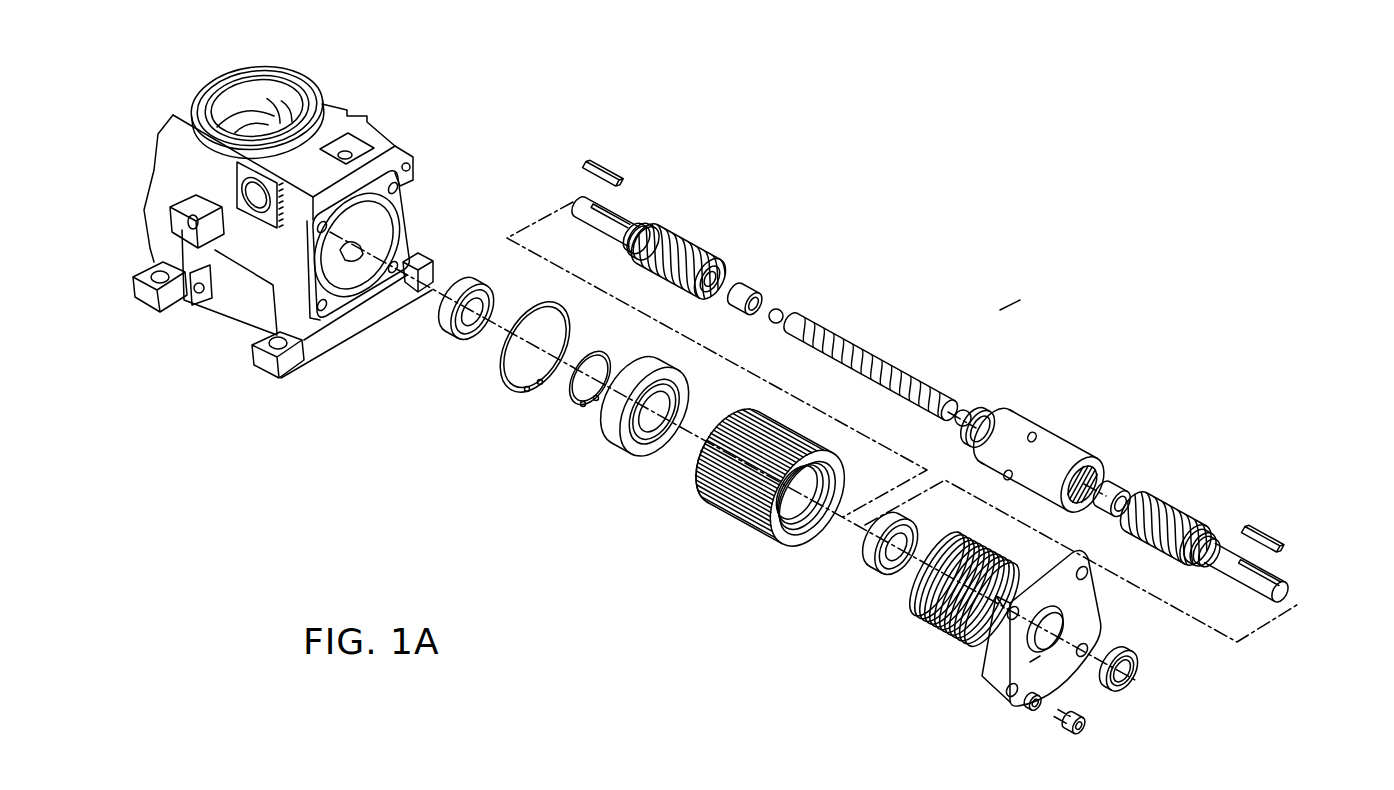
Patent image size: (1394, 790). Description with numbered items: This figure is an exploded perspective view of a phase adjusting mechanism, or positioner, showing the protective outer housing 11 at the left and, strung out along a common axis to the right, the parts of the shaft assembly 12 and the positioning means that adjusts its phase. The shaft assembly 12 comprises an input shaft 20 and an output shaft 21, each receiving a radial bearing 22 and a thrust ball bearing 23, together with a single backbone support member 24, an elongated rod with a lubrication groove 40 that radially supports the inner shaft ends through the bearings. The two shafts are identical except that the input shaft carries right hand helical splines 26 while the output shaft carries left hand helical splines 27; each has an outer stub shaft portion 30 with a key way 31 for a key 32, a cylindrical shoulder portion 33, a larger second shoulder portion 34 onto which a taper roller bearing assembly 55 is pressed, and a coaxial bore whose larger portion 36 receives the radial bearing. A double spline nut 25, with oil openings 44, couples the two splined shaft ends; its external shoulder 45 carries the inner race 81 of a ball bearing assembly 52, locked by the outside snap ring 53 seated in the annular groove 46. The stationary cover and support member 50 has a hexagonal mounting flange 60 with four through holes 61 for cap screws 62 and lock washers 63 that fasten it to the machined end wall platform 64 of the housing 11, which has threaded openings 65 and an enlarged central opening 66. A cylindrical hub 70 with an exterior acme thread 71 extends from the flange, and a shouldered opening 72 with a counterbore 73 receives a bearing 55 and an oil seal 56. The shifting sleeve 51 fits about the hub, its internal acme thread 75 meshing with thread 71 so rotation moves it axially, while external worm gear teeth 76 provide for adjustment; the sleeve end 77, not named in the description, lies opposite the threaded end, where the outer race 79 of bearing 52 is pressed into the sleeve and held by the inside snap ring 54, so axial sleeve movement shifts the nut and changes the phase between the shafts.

The outer housing means 11 is at (267, 225).
The shaft assembly 12 is at (1059, 288).
The input shaft 20 is at (1292, 563).
The output shaft 21 is at (682, 263).
The radial bearing 22 is at (960, 390).
The thrust ball bearing 23 is at (783, 314).
The backbone support member 24 is at (871, 358).
The double spline nut 25 is at (1059, 460).
The right hand helical splines 26 is at (1182, 522).
The left hand helical splines 27 is at (684, 290).
The stub shaft portion 30 is at (600, 222).
The key way 31 is at (616, 210).
The key means 32 is at (612, 172).
The cylindrical shoulder portion 33 is at (625, 240).
The second cylindrical shoulder portion 34 is at (630, 250).
The first larger diametered bore portion 36 is at (716, 286).
The groove 40 is at (901, 376).
The oil openings 44 is at (1004, 471).
The external cylindrical shoulder portion 45 is at (1036, 432).
The annular groove 46 is at (973, 440).
The cover and support member 50 is at (1063, 687).
The shifting sleeve 51 is at (716, 523).
The ball bearing assembly 52 is at (631, 426).
The outside locking ring 53 is at (567, 400).
The inside locking ring 54 is at (507, 367).
The taper roller shaft bearing assemblies 55 is at (457, 338).
The oil seals 56 is at (1134, 681).
The mounting flange portion 60 is at (992, 682).
The through holes 61 is at (1086, 580).
The cap screw 62 is at (1069, 741).
The lock washers 63 is at (1031, 712).
The machined end wall platform 64 is at (333, 313).
The threaded openings 65 is at (402, 186).
The enlarged central opening 66 is at (399, 233).
The cylindrical hub portion 70 is at (923, 589).
The exterior acme thread 71 is at (968, 542).
The shouldered cylindrical opening 72 is at (1062, 631).
The counter bored portion 73 is at (1060, 618).
The internal acme thread 75 is at (798, 540).
The external worm gear teeth 76 is at (808, 440).
The nut end 77 is at (716, 428).
The outer race 79 is at (678, 378).
The inner race 81 is at (648, 462).